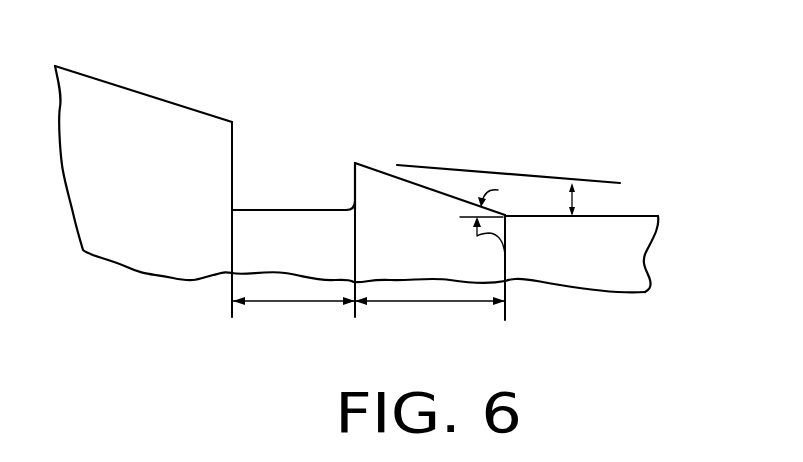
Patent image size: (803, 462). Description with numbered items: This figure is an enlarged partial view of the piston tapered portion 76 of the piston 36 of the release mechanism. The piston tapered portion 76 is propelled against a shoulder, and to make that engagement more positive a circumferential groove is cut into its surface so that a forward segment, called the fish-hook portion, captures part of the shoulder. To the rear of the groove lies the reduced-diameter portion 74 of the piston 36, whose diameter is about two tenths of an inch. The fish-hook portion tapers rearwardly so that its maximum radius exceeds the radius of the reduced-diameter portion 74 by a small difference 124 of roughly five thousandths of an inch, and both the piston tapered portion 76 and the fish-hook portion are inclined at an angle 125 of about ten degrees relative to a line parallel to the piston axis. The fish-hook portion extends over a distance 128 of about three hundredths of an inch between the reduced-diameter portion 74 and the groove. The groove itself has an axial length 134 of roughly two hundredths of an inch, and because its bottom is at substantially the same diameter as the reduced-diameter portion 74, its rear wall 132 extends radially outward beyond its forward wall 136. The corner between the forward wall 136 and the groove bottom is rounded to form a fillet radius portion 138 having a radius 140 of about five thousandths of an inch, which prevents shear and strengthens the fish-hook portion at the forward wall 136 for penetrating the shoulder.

The piston tapered portion 76 is at (180, 128).
The rear wall 132 is at (233, 140).
The axial length 134 is at (285, 302).
The radius 140 is at (344, 205).
The forward wall 136 is at (355, 171).
The fillet radius portion 138 is at (355, 213).
The piston 36 is at (486, 129).
The difference 124 is at (574, 193).
The angle 125 is at (505, 255).
The distance 128 is at (417, 302).
The reduced-diameter portion 74 is at (592, 280).